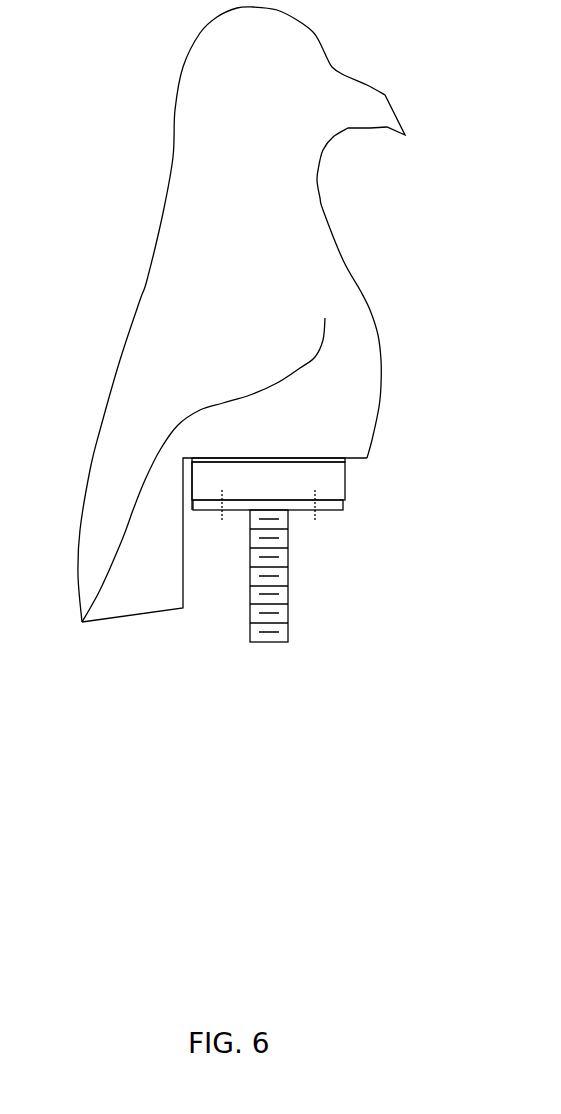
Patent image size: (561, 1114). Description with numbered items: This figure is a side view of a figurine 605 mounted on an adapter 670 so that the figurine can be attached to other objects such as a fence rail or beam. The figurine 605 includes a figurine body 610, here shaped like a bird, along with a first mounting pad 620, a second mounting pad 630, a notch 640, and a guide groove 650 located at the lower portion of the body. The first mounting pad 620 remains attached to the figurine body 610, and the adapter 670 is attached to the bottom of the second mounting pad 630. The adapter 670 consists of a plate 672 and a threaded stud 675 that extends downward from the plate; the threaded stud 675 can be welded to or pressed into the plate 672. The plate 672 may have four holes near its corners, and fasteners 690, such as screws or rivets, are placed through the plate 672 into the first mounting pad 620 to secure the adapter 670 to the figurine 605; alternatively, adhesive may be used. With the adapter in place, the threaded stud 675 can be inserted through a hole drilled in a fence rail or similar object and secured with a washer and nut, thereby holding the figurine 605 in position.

The figurine 605 is at (157, 161).
The figurine body 610 is at (147, 280).
The first mounting pad 620 is at (345, 492).
The second mounting pad 630 is at (205, 592).
The notch 640 is at (188, 462).
The guide groove 650 is at (345, 463).
The adapter 670 is at (313, 563).
The plate 672 is at (340, 513).
The threaded stud 675 is at (288, 613).
The fasteners 690 is at (230, 513).